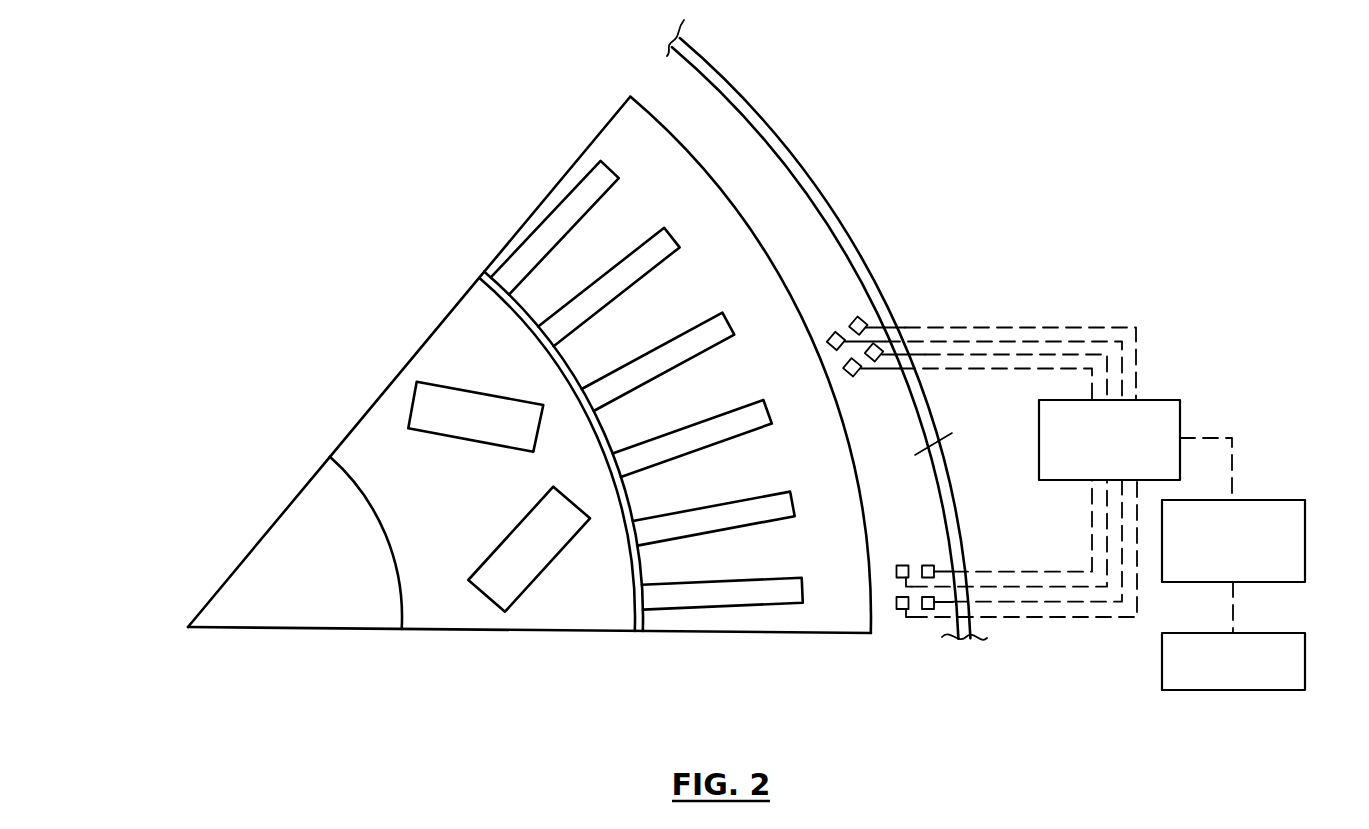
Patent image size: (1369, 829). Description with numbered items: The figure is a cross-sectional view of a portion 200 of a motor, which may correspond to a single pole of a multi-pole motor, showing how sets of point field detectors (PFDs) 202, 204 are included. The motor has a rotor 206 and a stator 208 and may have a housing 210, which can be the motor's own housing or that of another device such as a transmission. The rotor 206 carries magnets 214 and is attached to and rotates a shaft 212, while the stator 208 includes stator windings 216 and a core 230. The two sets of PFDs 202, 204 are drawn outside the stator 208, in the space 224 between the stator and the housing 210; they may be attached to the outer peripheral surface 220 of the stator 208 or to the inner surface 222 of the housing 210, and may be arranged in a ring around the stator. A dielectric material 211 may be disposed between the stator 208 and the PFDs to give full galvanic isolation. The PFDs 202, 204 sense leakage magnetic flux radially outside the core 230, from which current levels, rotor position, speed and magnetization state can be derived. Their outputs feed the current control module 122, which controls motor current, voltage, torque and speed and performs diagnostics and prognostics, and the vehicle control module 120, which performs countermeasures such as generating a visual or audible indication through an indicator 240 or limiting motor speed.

The portion of a motor 200 is at (206, 165).
The point field detectors 202 is at (865, 320).
The point field detectors 204 is at (901, 565).
The rotor 206 is at (437, 326).
The stator 208 is at (572, 163).
The housing 210 is at (855, 232).
The dielectric material 211 is at (952, 433).
The shaft 212 is at (300, 492).
The magnets 214 is at (413, 397).
The stator windings 216 is at (621, 180).
The outer peripheral surface 220 is at (729, 185).
The inner surface 222 is at (800, 185).
The space 224 is at (648, 85).
The core 230 is at (684, 307).
The current control module 122 is at (1180, 399).
The vehicle control module 120 is at (1256, 499).
The indicator 240 is at (1256, 632).